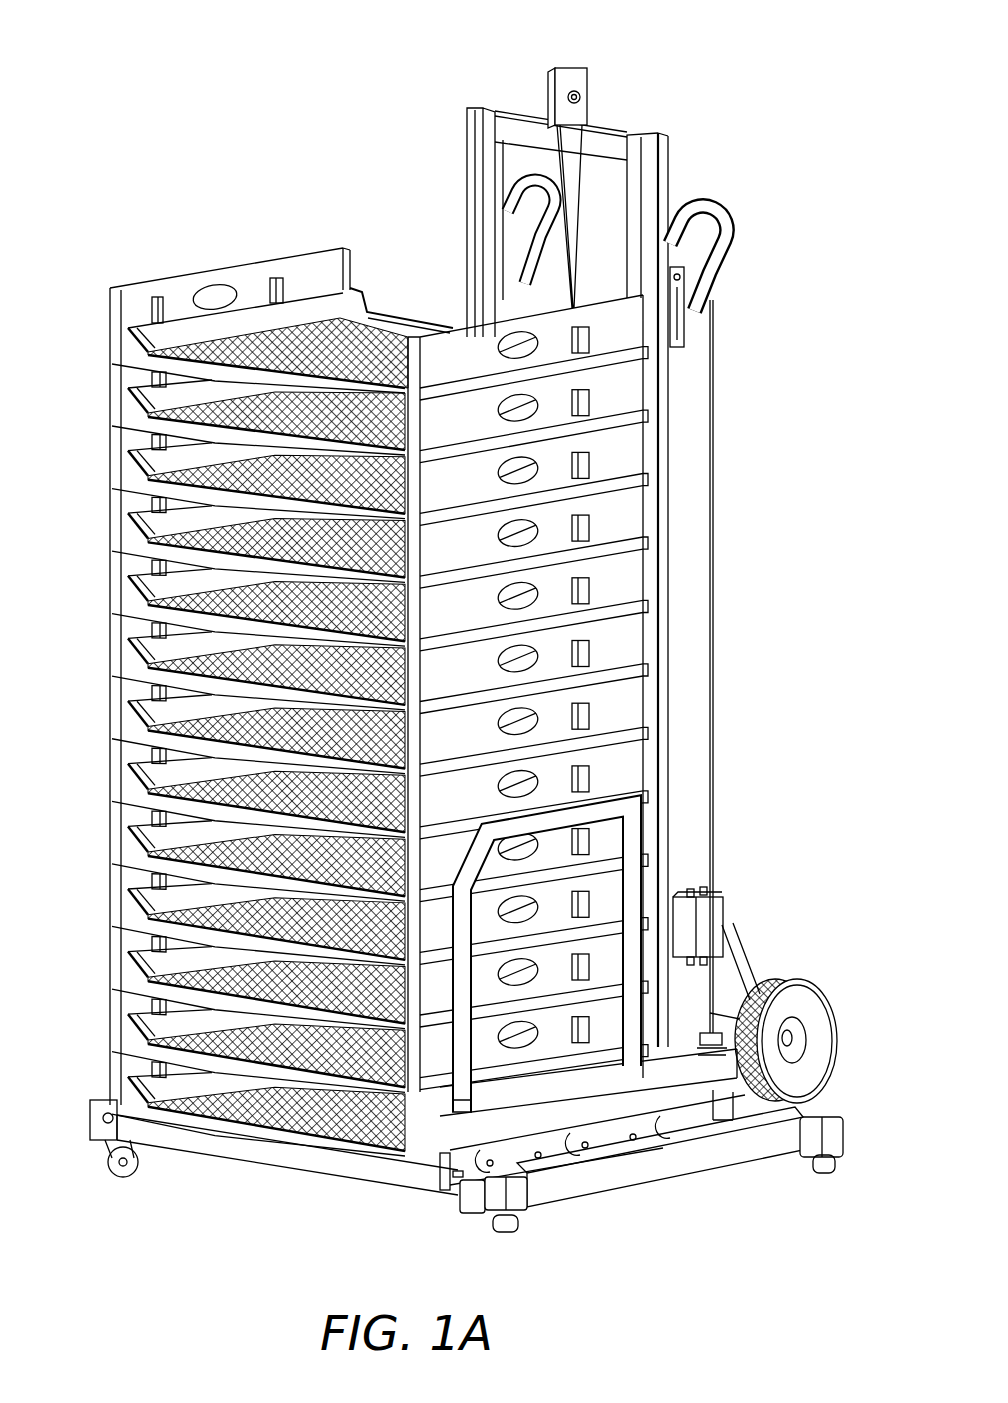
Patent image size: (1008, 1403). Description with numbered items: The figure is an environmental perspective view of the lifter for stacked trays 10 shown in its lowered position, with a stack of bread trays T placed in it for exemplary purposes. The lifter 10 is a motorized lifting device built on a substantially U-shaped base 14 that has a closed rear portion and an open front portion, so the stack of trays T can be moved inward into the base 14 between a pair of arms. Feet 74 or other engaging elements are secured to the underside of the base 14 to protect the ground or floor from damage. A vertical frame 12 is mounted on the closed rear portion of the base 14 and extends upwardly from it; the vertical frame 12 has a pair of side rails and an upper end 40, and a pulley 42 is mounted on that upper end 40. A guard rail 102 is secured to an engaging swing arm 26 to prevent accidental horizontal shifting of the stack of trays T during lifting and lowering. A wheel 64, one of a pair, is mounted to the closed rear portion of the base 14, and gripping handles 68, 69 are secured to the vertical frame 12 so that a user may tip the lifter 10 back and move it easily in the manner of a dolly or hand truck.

The lifter for stacked trays 10 is at (489, 654).
The vertical frame 12 is at (628, 130).
The substantially U-shaped base 14 is at (586, 1197).
The engaging swing arm 26 is at (648, 1083).
The upper end 40 is at (517, 112).
The pulley 42 is at (564, 68).
The wheel 64 is at (838, 1038).
The gripping handle 68 is at (728, 208).
The gripping handle 69 is at (535, 190).
The feet 74 is at (508, 1232).
The guard rail 102 is at (645, 808).
The bread trays T is at (100, 257).